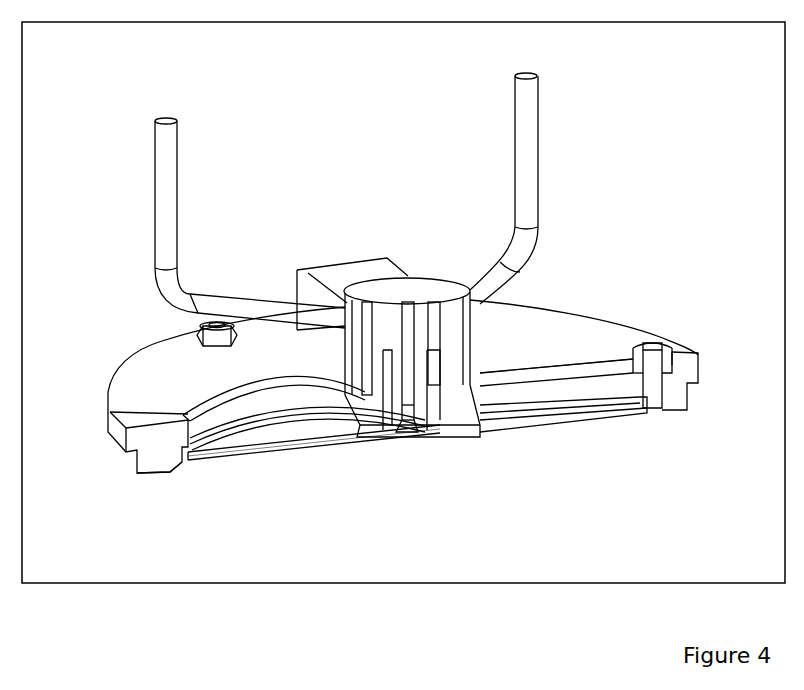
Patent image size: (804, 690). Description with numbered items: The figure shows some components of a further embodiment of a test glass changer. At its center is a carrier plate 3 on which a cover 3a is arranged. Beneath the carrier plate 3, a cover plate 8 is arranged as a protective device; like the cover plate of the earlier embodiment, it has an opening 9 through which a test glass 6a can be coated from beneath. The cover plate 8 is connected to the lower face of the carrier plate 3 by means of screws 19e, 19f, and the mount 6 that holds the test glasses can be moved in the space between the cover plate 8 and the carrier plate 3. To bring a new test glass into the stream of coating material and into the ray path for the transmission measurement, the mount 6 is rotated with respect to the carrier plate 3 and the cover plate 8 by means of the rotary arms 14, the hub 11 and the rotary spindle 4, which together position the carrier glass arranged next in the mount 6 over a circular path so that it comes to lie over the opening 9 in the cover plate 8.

The carrier plate 3 is at (132, 460).
The cover 3a is at (564, 341).
The rotary spindle 4 is at (405, 300).
The mount 6 is at (232, 428).
The test glass 6a is at (282, 445).
The cover plate 8 is at (152, 472).
The opening 9 is at (318, 452).
The hub 11 is at (421, 285).
The rotary arms 14 is at (527, 207).
The screw 19e is at (200, 327).
The screw 19f is at (653, 343).